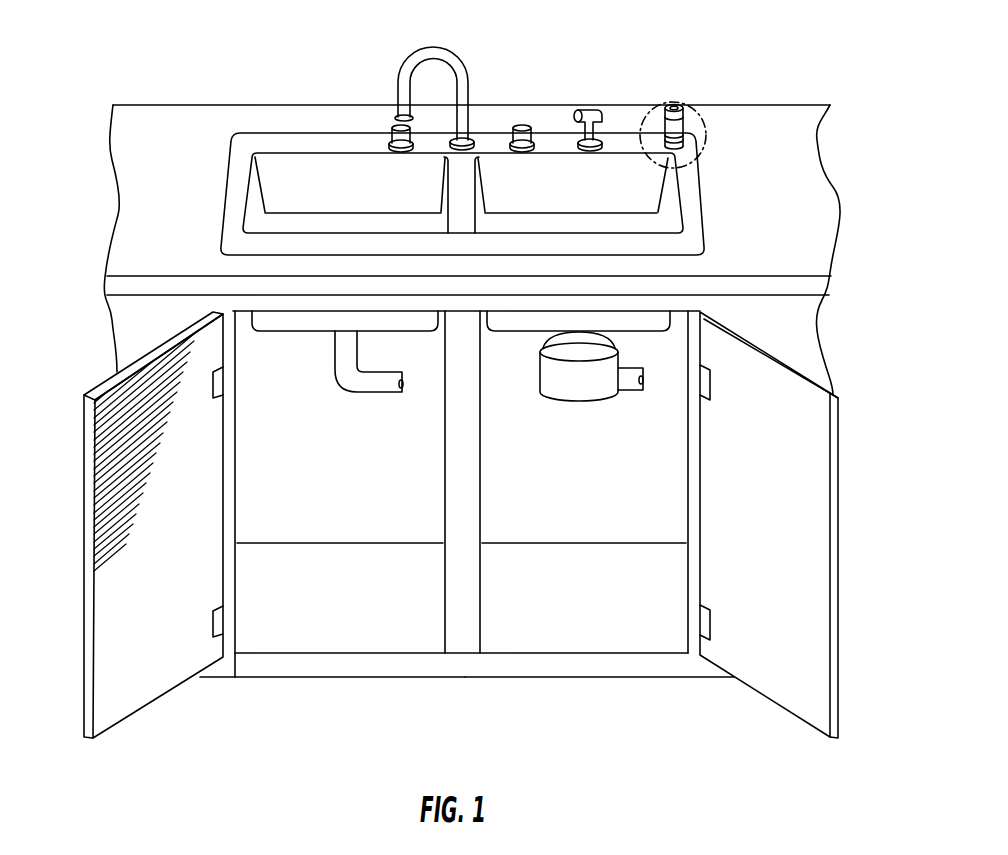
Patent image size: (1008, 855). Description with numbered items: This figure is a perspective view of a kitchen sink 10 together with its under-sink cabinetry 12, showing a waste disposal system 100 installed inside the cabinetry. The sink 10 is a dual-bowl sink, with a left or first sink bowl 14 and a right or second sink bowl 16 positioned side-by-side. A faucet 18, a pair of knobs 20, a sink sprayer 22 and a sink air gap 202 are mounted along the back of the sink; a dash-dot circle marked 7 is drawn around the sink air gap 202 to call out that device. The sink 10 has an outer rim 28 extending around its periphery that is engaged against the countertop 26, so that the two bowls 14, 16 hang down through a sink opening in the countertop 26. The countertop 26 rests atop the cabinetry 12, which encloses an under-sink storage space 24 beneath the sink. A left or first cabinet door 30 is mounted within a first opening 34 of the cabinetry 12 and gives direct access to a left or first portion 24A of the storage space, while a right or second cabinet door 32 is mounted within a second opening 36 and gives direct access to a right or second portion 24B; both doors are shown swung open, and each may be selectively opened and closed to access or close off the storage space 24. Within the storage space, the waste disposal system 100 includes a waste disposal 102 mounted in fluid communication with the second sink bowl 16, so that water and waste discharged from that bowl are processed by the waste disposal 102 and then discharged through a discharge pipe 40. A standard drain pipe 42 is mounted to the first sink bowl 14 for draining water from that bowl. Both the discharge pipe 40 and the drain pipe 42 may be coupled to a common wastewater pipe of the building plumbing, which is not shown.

The kitchen sink 10 is at (300, 106).
The under-sink cabinetry 12 is at (135, 323).
The first sink bowl 14 is at (278, 176).
The second sink bowl 16 is at (647, 183).
The faucet 18 is at (460, 52).
The knobs 20 is at (395, 128).
The sink sprayer 22 is at (592, 110).
The under-sink storage space 24 is at (257, 425).
The first portion of the under-sink storage space 24A is at (362, 521).
The second portion of the under-sink storage space 24B is at (597, 521).
The countertop 26 is at (818, 200).
The outer rim 28 is at (697, 225).
The first cabinet door 30 is at (140, 560).
The second cabinet door 32 is at (813, 527).
The first opening 34 is at (333, 658).
The second opening 36 is at (633, 655).
The discharge pipe 40 is at (645, 378).
The drain pipe 42 is at (378, 380).
The waste disposal system 100 is at (627, 388).
The waste disposal 102 is at (547, 372).
The sink air gap 202 is at (690, 123).
The section view indicator 7 is at (687, 97).